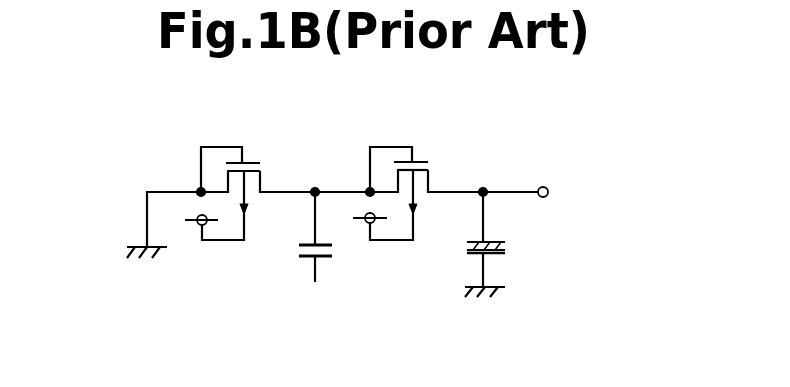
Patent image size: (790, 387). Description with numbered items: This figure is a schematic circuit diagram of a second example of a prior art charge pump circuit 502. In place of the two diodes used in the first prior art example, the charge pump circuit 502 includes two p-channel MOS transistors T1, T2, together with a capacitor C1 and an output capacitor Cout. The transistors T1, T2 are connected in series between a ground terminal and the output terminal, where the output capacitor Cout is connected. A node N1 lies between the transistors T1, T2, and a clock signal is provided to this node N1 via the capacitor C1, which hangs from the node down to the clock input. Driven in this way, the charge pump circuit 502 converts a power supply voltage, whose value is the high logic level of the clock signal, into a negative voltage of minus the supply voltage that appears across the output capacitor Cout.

The charge pump circuit 502 is at (493, 140).
The p-channel MOS transistor T1 is at (252, 160).
The p-channel MOS transistor T2 is at (421, 159).
The node N1 is at (317, 184).
The capacitor C1 is at (318, 260).
The output capacitor Cout is at (523, 242).